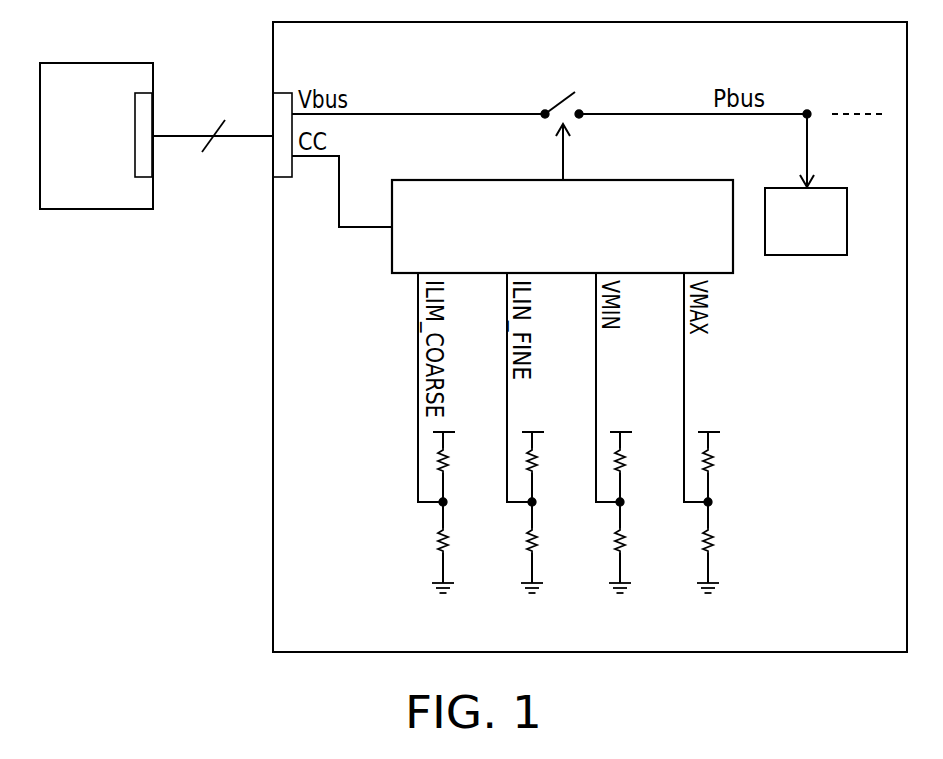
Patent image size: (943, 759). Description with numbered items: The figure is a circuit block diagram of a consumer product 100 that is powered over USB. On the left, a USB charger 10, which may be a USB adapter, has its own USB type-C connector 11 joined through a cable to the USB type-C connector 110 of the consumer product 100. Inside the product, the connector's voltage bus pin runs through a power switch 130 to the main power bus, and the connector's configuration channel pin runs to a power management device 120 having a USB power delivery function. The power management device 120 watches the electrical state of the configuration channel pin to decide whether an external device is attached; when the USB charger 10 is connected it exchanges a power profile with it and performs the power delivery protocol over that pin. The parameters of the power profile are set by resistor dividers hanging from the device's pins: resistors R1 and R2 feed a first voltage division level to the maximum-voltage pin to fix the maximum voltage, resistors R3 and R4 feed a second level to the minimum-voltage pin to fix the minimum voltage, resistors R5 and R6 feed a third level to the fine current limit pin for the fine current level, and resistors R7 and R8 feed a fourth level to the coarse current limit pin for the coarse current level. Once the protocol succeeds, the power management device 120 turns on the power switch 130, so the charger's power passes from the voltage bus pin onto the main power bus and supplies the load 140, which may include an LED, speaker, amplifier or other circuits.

The USB charger 10 is at (93, 210).
The USB type-C connector 11 is at (153, 154).
The consumer product 100 is at (272, 607).
The USB type-C connector 110 is at (273, 153).
The power management device 120 is at (670, 178).
The power switch 130 is at (560, 92).
The load 140 is at (805, 255).
The resistor R1 is at (714, 463).
The resistor R2 is at (714, 541).
The resistor R3 is at (626, 463).
The resistor R4 is at (626, 541).
The resistor R5 is at (538, 463).
The resistor R6 is at (538, 541).
The resistor R7 is at (449, 463).
The resistor R8 is at (449, 541).